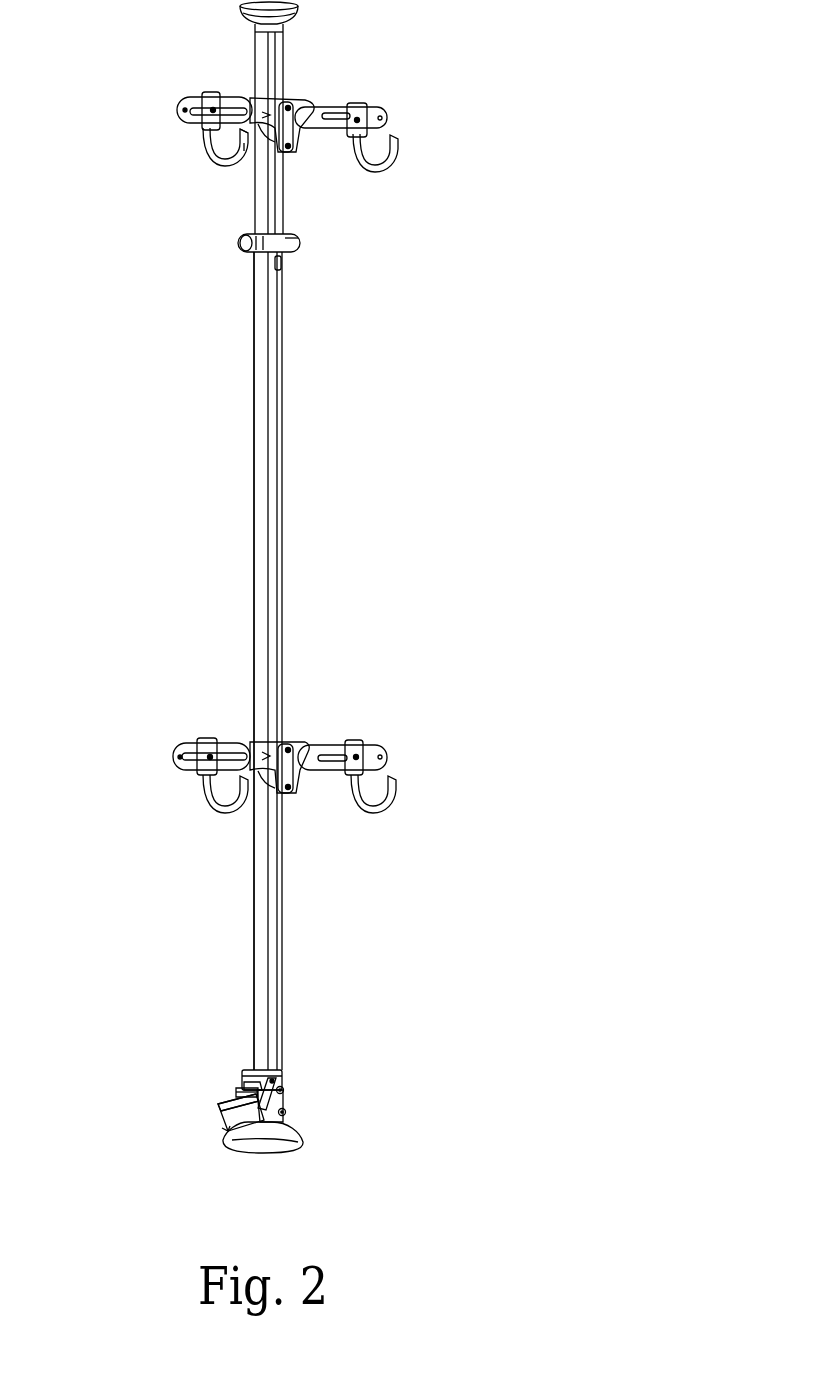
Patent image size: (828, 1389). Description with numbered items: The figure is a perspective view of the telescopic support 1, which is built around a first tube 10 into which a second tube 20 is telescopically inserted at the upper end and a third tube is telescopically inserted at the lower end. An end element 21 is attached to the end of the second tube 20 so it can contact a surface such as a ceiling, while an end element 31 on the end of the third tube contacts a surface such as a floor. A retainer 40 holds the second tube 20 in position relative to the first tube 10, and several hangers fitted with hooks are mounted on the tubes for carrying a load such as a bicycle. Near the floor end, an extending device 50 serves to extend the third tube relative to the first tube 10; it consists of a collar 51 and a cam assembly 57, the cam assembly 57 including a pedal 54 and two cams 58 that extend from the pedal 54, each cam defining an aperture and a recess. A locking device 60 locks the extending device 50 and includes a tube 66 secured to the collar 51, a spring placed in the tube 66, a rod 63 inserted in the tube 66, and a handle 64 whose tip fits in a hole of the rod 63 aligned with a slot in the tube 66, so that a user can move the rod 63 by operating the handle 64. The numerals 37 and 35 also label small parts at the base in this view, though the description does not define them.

The telescopic support 1 is at (196, 413).
The first tube 10 is at (266, 452).
The second tube 20 is at (272, 58).
The end element 21 is at (292, 11).
The retainer 40 is at (301, 242).
The extending device 50 is at (206, 1046).
The collar 51 is at (260, 1074).
The lever 37 is at (282, 1087).
The cam 58 is at (284, 1092).
The fastening bolt 35 is at (286, 1114).
The end element 31 is at (275, 1140).
The locking device 60 is at (102, 1043).
The handle 64 is at (251, 1086).
The tube 66 is at (238, 1093).
The rod 63 is at (225, 1103).
The pedal 54 is at (236, 1117).
The cam assembly 57 is at (212, 1140).